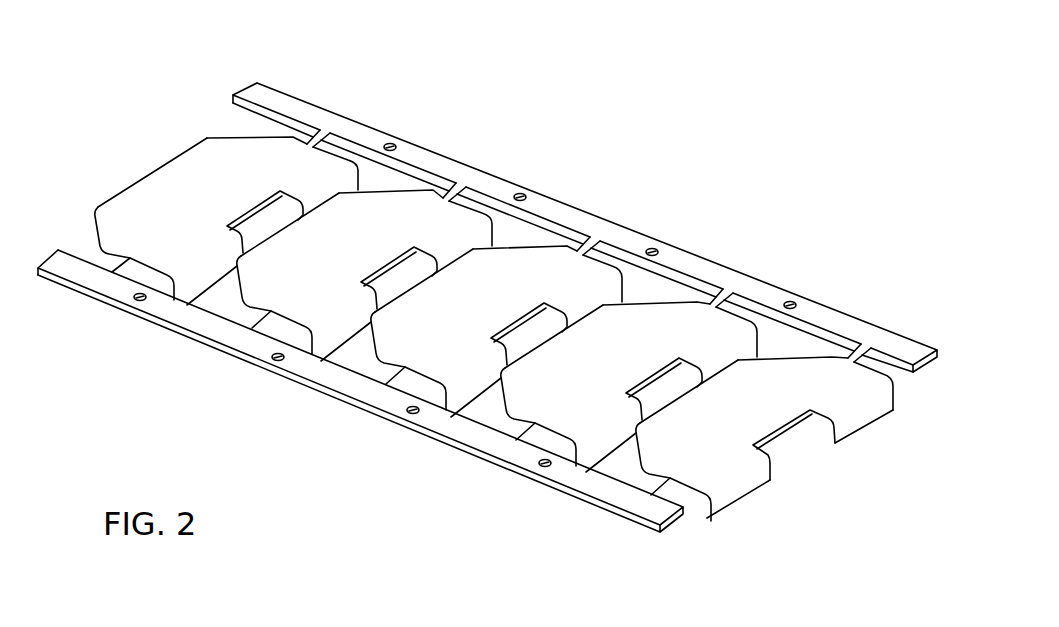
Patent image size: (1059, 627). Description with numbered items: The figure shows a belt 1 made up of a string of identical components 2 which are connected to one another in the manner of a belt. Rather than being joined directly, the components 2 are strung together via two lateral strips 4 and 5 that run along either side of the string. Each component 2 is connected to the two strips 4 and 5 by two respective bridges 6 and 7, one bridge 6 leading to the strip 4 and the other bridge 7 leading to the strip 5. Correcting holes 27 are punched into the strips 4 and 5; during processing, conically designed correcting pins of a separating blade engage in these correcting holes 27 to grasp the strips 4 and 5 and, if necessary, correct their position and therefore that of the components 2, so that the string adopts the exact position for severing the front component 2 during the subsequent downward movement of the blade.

The belt 1 is at (487, 310).
The component 2 is at (412, 213).
The lateral strip 4 is at (555, 200).
The lateral strip 5 is at (345, 382).
The bridge 6 is at (325, 132).
The bridge 7 is at (113, 262).
The correcting hole 27 is at (790, 301).